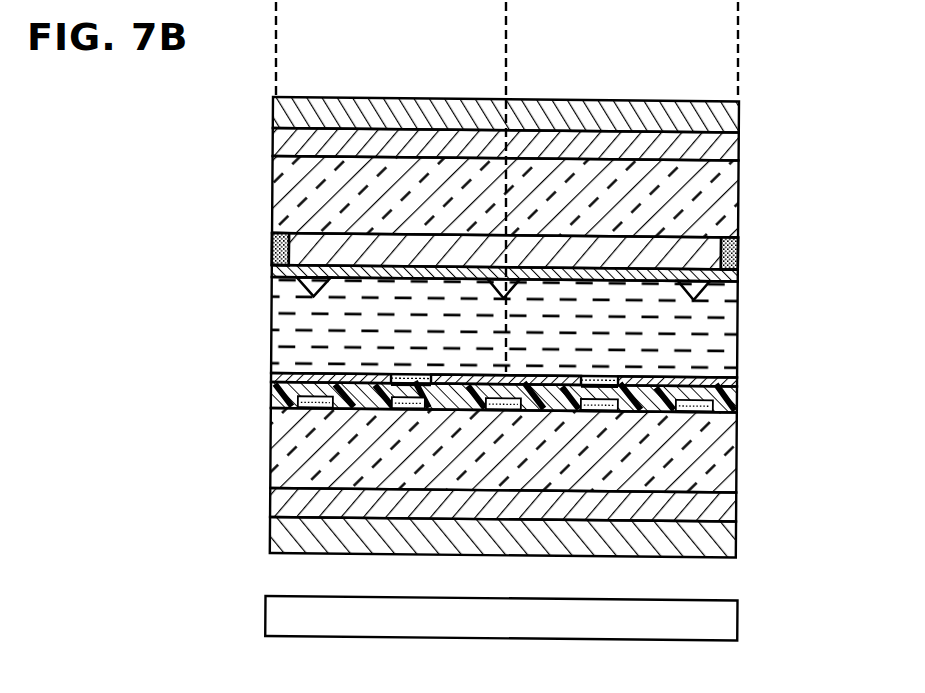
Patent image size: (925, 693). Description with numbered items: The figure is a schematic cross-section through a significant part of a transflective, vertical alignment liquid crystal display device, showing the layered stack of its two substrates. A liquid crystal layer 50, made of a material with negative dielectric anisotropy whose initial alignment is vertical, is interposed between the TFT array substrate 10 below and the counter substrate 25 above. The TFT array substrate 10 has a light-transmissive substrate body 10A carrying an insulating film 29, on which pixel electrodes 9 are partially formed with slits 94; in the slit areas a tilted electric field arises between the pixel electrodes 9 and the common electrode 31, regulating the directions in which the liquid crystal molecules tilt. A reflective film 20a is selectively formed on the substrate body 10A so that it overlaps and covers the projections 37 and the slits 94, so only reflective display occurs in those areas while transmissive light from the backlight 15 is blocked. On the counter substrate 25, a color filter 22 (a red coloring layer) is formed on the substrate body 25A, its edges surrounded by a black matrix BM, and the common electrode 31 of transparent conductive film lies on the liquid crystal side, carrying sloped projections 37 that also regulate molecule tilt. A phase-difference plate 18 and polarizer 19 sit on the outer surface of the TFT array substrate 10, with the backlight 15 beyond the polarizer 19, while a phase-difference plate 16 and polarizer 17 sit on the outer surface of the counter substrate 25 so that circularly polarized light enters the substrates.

The polarizer 17 is at (739, 113).
The phase-difference plate 16 is at (739, 150).
The substrate body 25A is at (739, 190).
The color filter 22 is at (739, 250).
The black matrix BM is at (272, 253).
The common electrode 31 is at (739, 277).
The liquid crystal layer 50 is at (739, 332).
The projection 37 is at (300, 292).
The slit 94 is at (425, 379).
The pixel electrode 9 is at (739, 388).
The insulating film 29 is at (739, 401).
The reflective film 20a is at (313, 408).
The substrate body 10A is at (739, 466).
The phase-difference plate 18 is at (739, 521).
The polarizer 19 is at (739, 552).
The backlight 15 is at (739, 621).
The counter substrate 25 is at (178, 95).
The TFT array substrate 10 is at (173, 370).